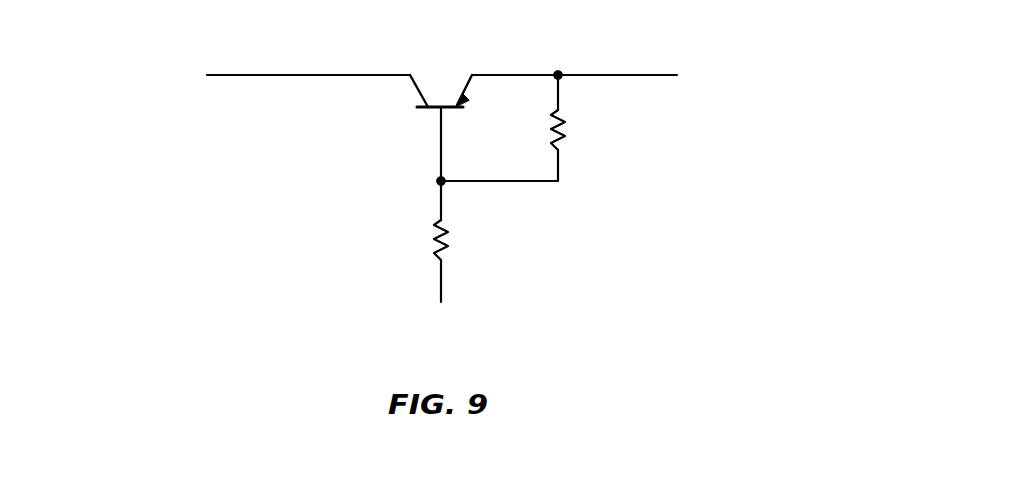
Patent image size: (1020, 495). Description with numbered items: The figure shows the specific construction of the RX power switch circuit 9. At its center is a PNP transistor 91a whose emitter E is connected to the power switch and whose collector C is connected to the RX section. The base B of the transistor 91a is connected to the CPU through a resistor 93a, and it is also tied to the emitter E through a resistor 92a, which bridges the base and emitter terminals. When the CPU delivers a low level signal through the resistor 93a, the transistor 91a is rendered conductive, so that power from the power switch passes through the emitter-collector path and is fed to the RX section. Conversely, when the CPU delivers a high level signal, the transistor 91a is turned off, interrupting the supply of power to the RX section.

The RX power switch circuit 9 is at (630, 170).
The PNP transistor 91a is at (440, 85).
The resistor 92a is at (563, 133).
The resistor 93a is at (446, 246).